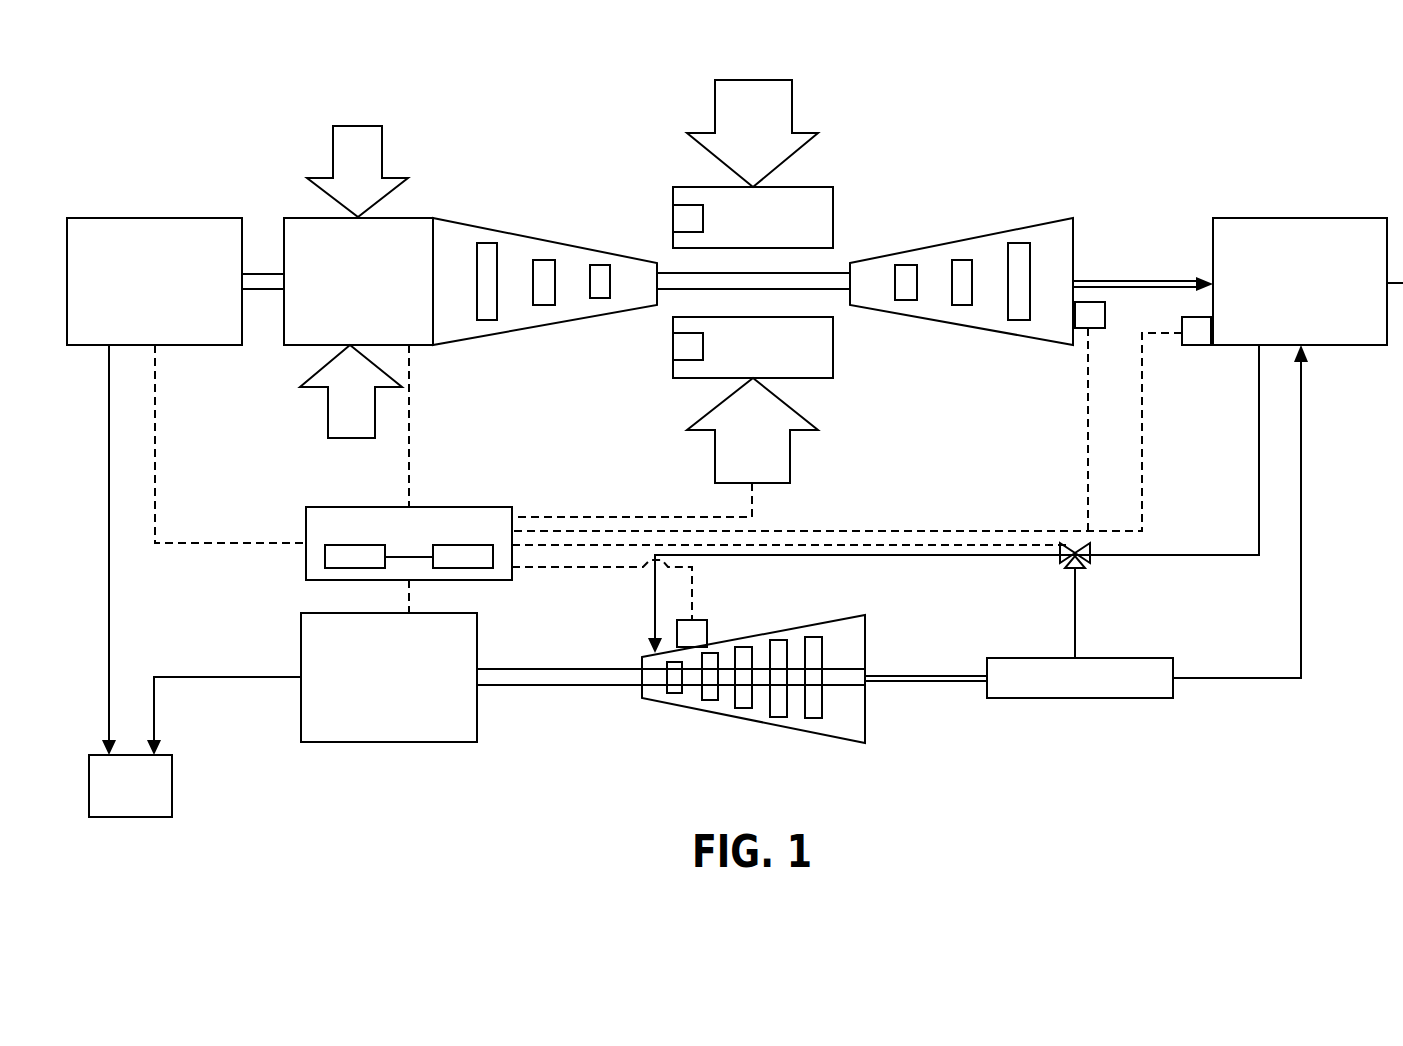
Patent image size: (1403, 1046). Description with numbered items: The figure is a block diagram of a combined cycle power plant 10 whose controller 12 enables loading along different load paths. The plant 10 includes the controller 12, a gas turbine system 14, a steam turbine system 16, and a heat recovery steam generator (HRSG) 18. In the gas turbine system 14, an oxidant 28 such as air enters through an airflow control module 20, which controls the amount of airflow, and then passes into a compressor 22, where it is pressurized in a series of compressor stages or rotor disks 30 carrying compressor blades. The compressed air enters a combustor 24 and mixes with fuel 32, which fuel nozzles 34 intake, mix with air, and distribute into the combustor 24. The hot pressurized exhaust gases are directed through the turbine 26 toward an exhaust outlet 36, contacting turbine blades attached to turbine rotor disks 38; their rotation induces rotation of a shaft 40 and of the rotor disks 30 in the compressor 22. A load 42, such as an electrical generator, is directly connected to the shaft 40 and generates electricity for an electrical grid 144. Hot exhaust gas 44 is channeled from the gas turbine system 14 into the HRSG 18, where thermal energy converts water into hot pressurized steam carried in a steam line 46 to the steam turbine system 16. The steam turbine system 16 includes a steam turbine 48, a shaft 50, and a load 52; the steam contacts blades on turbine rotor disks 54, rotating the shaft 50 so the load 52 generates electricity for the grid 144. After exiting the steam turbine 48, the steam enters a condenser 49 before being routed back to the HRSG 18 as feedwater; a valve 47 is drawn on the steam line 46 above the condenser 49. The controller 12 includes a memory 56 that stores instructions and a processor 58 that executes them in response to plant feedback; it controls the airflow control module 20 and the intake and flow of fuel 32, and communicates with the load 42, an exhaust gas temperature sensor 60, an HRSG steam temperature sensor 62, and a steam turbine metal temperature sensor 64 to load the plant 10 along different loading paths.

The combined cycle power plant 10 is at (1103, 121).
The controller 12 is at (470, 507).
The gas turbine system 14 is at (489, 116).
The steam turbine system 16 is at (950, 742).
The heat recovery steam generator (HRSG) 18 is at (1290, 218).
The airflow control module 20 is at (290, 218).
The compressor 22 is at (455, 348).
The combustor 24 is at (833, 218).
The turbine 26 is at (975, 238).
The oxidant 28 is at (333, 148).
The compressor stages or rotor disks 30 is at (600, 298).
The fuel 32 is at (715, 97).
The fuel nozzles 34 is at (703, 218).
The exhaust outlet 36 is at (1073, 243).
The turbine rotor disks 38 is at (906, 300).
The shaft 40 is at (265, 290).
The load 42 is at (155, 218).
The hot exhaust gas 44 is at (1150, 281).
The steam line 46 is at (948, 555).
The valve 47 is at (1090, 556).
The steam turbine 48 is at (760, 634).
The condenser 49 is at (1090, 698).
The shaft 50 is at (572, 690).
The load 52 is at (388, 742).
The turbine rotor disks 54 is at (674, 693).
The memory 56 is at (355, 568).
The processor 58 is at (470, 568).
The exhaust gas temperature sensor 60 is at (1105, 315).
The HRSG steam temperature sensor 62 is at (1195, 345).
The steam turbine metal temperature sensor 64 is at (705, 620).
The electrical grid 144 is at (108, 800).